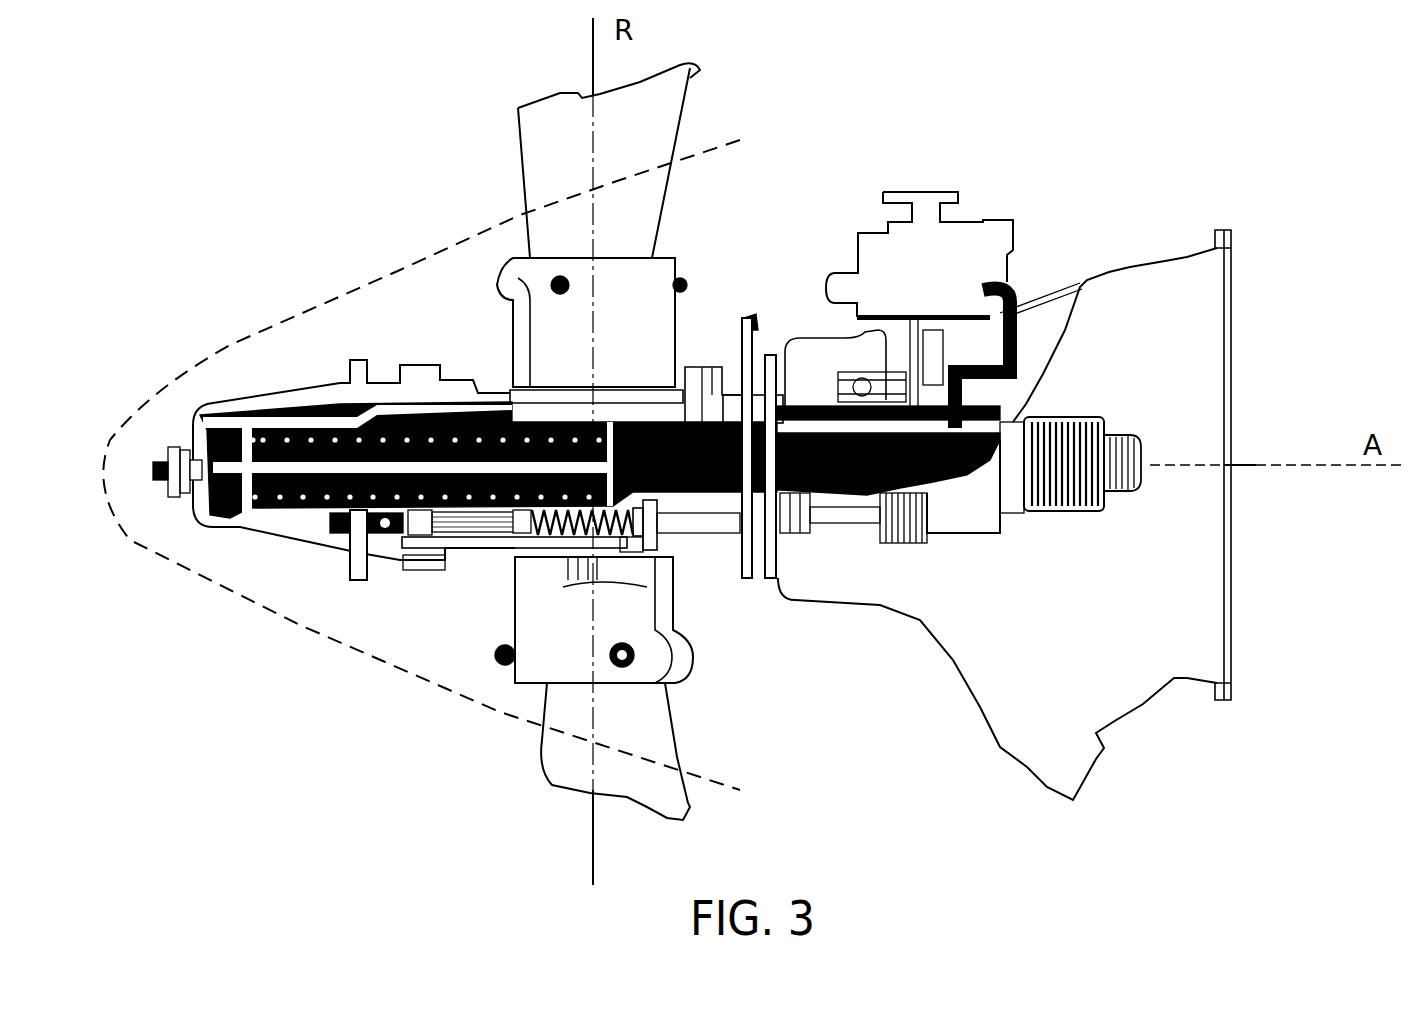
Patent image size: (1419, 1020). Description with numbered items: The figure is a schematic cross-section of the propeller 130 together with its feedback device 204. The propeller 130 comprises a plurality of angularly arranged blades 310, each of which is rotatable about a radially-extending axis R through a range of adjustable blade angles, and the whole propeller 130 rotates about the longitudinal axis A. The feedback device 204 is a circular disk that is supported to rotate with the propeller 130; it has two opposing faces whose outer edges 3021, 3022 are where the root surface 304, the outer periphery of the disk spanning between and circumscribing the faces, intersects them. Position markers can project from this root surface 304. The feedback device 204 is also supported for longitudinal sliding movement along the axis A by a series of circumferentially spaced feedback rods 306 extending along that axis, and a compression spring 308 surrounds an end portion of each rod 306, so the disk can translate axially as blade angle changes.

The propeller 130 is at (270, 212).
The blades 310 is at (512, 107).
The feedback device 204 is at (755, 316).
The root surface 304 is at (755, 410).
The outer edge 3021 is at (737, 547).
The outer edge 3022 is at (767, 550).
The feedback rods 306 is at (673, 523).
The compression spring 308 is at (532, 537).